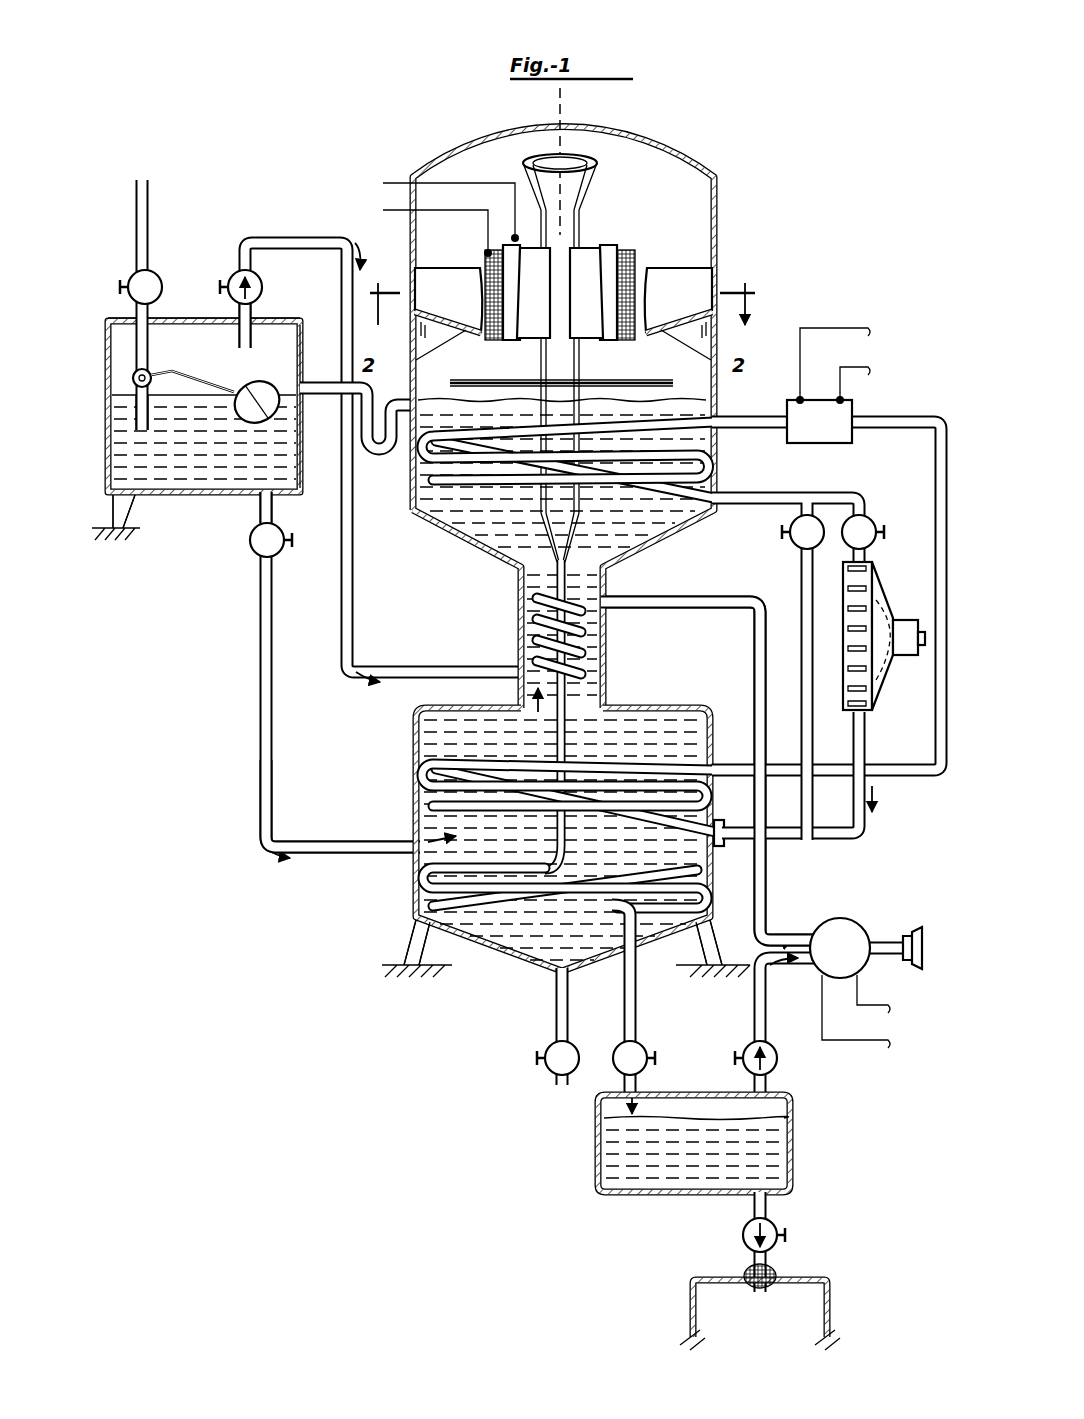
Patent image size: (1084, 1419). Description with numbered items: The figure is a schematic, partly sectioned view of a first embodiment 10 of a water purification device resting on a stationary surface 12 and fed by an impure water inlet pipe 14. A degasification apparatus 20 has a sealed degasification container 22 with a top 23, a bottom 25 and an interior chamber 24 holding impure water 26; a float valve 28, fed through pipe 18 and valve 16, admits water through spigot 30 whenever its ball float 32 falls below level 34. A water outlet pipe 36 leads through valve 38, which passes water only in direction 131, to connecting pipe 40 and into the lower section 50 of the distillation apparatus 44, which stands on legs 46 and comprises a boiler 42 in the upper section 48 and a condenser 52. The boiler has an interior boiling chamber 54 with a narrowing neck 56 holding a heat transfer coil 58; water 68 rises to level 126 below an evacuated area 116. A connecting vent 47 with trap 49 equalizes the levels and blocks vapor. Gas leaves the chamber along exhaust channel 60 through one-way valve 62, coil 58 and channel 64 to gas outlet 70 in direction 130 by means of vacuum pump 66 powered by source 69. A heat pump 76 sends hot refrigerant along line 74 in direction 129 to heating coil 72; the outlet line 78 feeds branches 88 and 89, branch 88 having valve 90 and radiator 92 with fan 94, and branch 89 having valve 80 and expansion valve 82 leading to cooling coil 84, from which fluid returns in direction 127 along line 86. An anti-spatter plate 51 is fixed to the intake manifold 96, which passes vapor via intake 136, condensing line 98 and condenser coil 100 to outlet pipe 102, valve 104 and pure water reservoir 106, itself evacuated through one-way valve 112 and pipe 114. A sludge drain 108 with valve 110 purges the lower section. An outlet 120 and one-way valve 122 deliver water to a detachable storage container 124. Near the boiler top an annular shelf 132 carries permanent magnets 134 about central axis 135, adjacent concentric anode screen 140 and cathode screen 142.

The water purification device 10 is at (378, 155).
The stationary surface 12 is at (105, 522).
The impure water inlet pipe 14 is at (138, 212).
The valve 16 is at (130, 277).
The pipe 18 is at (140, 343).
The degasification apparatus 20 is at (195, 560).
The degasification container 22 is at (305, 375).
The top 23 is at (110, 322).
The interior chamber 24 is at (192, 342).
The bottom 25 is at (190, 510).
The impure water 26 is at (205, 443).
The float valve 28 is at (132, 378).
The spigot 30 is at (136, 410).
The ball float 32 is at (256, 384).
The predetermined level 34 is at (128, 380).
The water outlet pipe 36 is at (260, 512).
The manually controllable valve 38 is at (255, 552).
The connecting pipe 40 is at (270, 730).
The boiler 42 is at (478, 552).
The distillation apparatus 44 is at (737, 283).
The legs 46 is at (405, 940).
The connecting vent 47 is at (314, 395).
The upper section 48 is at (720, 232).
The trap 49 is at (382, 444).
The lower section 50 is at (413, 802).
The anti-spatter plate 51 is at (628, 382).
The condenser 52 is at (590, 540).
The interior boiling chamber 54 is at (412, 523).
The narrowing neck 56 is at (520, 648).
The heat transfer coil 58 is at (583, 660).
The gas exhaust channel 60 is at (252, 308).
The one-way valve 62 is at (240, 272).
The channel 64 is at (650, 600).
The vacuum pump 66 is at (862, 925).
The water 68 is at (528, 572).
The electrical power source 69 is at (880, 330).
The gas outlet 70 is at (882, 960).
The heating coil 72 is at (440, 470).
The line 74 is at (725, 430).
The heat pump 76 is at (855, 402).
The outlet line 78 is at (737, 495).
The valve 80 is at (790, 550).
The expansion valve 82 is at (720, 840).
The cooling coil 84 is at (428, 766).
The line 86 is at (900, 775).
The parallel line 88 is at (832, 495).
The line 89 is at (802, 622).
The valve 90 is at (872, 540).
The radiator 92 is at (878, 583).
The electric ventilating fan 94 is at (888, 682).
The intake manifold 96 is at (541, 372).
The condensing line 98 is at (575, 710).
The condenser coil 100 is at (415, 850).
The condenser outlet pipe 102 is at (625, 1015).
The valve 104 is at (642, 1048).
The pure water reservoir 106 is at (795, 1115).
The sludge drain 108 is at (555, 992).
The manually actuatable valve 110 is at (550, 1050).
The one-way valve 112 is at (777, 1060).
The pipe 114 is at (766, 1030).
The area 116 is at (517, 148).
The outlet 120 is at (768, 1205).
The one-way valve 122 is at (741, 1236).
The water transport and storage container 124 is at (832, 1305).
The water level 126 is at (602, 382).
The direction 127 is at (952, 445).
The direction 129 is at (783, 405).
The direction 130 is at (340, 242).
The direction 131 is at (258, 824).
The annular shelf 132 is at (432, 330).
The permanent magnets 134 is at (430, 268).
The central axis 135 is at (565, 104).
The intake 136 is at (590, 165).
The anode screen 140 is at (585, 250).
The cathode screen 142 is at (620, 255).